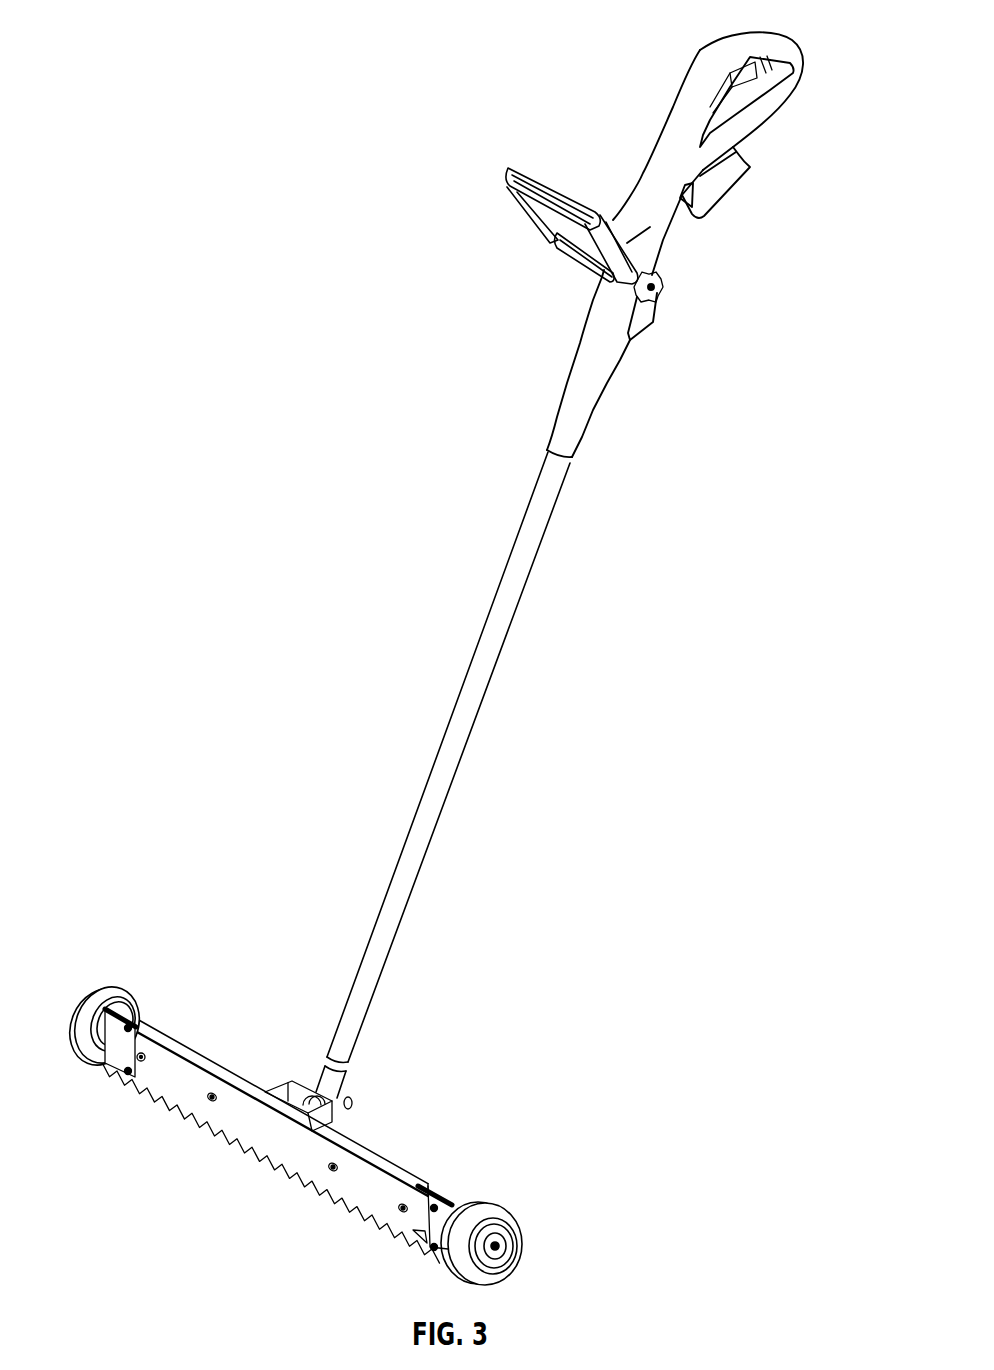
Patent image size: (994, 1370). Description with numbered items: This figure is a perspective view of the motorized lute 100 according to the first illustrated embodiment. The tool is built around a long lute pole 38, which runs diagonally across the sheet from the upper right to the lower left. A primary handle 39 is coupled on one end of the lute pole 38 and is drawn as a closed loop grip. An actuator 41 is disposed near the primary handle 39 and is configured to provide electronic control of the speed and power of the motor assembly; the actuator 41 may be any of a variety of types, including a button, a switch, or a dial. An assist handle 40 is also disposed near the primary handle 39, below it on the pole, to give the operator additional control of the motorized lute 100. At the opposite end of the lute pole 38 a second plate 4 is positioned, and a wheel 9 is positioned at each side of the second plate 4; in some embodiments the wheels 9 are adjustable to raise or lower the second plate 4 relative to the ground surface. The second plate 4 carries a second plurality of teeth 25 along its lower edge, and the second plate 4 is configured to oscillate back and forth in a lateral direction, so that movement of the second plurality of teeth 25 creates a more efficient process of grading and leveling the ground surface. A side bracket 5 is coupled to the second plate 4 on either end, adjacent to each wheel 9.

The motorized lute 100 is at (146, 116).
The primary handle 39 is at (780, 33).
The actuator 41 is at (757, 78).
The assist handle 40 is at (508, 172).
The lute pole 38 is at (497, 662).
The second plate 4 is at (187, 1072).
The second plurality of teeth 25 is at (280, 1168).
The side bracket 5 is at (137, 1018).
The wheel 9 is at (85, 1060).